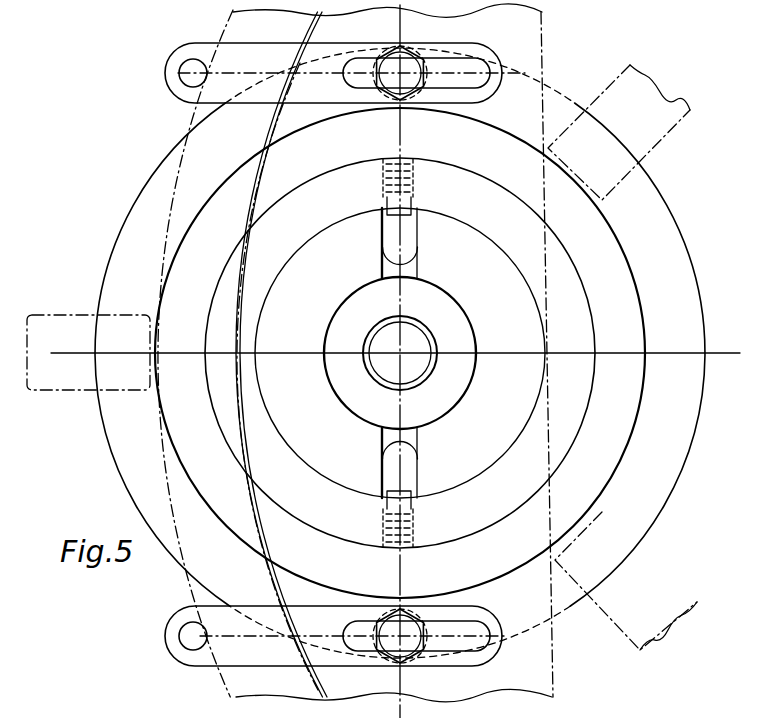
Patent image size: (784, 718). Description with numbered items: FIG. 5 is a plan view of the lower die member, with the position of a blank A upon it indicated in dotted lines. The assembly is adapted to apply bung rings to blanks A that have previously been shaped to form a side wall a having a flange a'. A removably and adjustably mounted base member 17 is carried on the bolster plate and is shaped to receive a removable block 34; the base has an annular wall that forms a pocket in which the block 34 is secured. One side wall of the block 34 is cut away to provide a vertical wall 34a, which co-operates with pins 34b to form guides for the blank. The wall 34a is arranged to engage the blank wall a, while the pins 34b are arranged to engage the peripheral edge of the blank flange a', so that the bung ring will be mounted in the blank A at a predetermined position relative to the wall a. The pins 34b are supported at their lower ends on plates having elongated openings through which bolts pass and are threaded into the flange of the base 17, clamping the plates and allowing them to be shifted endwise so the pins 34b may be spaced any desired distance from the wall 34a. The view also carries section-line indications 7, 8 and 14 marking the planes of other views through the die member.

The base member 17 is at (677, 256).
The removable block 34 is at (628, 317).
The vertical wall 34a is at (344, 156).
The pins 34b is at (190, 78).
The section line 14 is at (584, 675).
The section line 7 is at (51, 356).
The section line 8 is at (403, 25).
The side wall a is at (321, 704).
The flange a' is at (277, 390).
The blank A is at (363, 683).